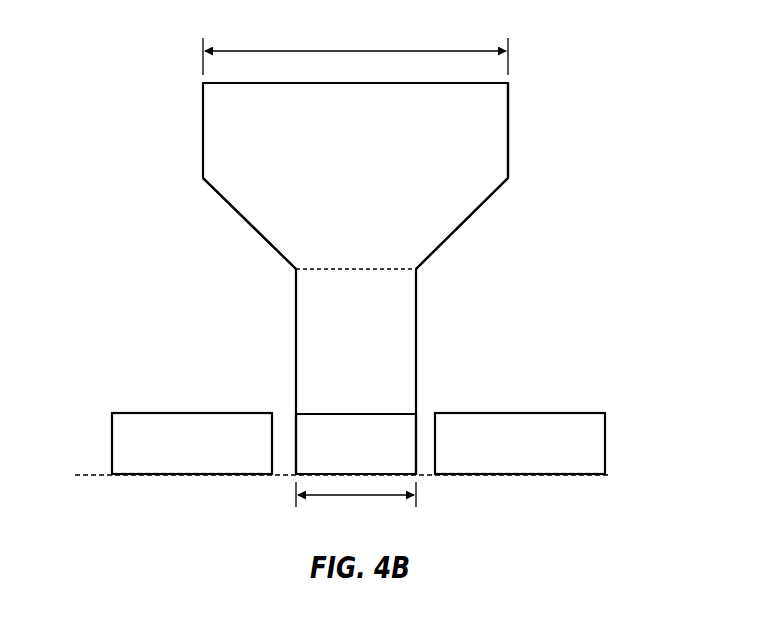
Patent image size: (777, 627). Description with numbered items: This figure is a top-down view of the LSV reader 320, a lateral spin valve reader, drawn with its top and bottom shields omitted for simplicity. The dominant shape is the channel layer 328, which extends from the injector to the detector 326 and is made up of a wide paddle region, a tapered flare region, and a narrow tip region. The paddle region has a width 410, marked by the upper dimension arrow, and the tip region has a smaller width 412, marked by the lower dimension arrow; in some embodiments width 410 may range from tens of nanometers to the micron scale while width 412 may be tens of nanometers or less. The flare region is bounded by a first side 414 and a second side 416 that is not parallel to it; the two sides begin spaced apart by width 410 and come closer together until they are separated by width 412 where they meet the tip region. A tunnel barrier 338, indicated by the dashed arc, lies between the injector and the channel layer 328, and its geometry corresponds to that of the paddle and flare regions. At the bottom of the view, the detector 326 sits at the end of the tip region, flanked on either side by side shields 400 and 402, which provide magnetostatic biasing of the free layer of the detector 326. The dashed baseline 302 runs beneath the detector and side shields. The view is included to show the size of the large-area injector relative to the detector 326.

The LSV reader 320 is at (134, 207).
The channel layer 328 is at (508, 107).
The first side 414 is at (237, 212).
The second side 416 is at (472, 214).
The tunnel barrier 338 is at (405, 250).
The detector 326 is at (402, 427).
The side shield 400 is at (130, 440).
The side shield 402 is at (590, 438).
The substrate surface 302 is at (98, 476).
The width 410 is at (335, 50).
The width 412 is at (355, 496).